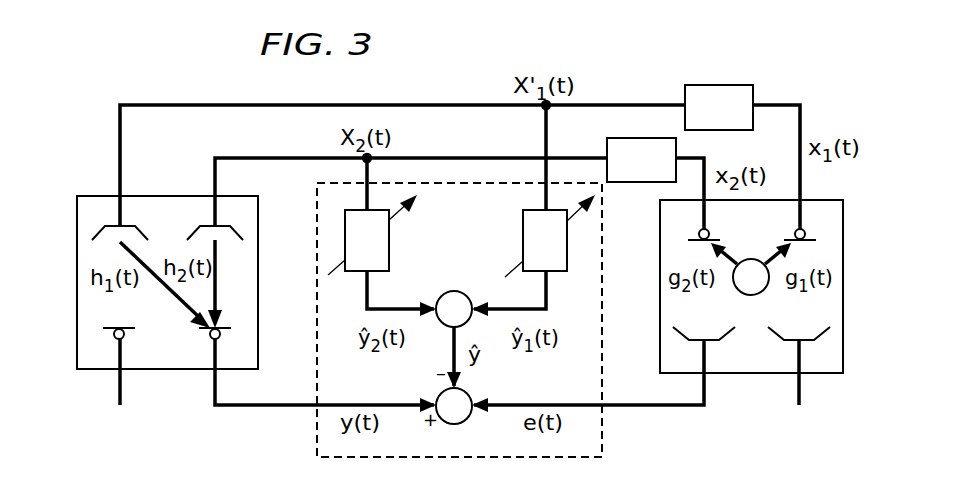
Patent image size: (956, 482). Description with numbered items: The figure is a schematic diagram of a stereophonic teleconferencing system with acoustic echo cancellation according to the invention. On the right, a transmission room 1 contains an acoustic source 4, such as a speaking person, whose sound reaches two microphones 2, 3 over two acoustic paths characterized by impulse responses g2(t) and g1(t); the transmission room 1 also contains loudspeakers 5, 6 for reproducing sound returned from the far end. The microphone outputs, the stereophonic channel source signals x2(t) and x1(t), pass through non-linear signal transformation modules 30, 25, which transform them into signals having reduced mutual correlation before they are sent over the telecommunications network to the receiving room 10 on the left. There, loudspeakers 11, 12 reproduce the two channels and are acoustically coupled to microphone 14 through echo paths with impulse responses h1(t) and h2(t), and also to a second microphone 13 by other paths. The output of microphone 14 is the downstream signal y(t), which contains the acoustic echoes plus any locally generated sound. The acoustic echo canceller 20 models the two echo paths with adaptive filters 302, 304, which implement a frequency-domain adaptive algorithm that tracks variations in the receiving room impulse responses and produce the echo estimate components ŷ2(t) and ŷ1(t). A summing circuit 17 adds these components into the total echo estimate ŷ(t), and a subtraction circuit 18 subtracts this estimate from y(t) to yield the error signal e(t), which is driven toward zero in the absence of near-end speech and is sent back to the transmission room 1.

The transmission room 1 is at (843, 258).
The microphone 2 is at (710, 231).
The microphone 3 is at (806, 232).
The acoustic source 4 is at (751, 259).
The loudspeaker 5 is at (698, 345).
The loudspeaker 6 is at (792, 345).
The receiving room 10 is at (258, 264).
The loudspeaker 11 is at (110, 226).
The loudspeaker 12 is at (211, 228).
The microphone 13 is at (113, 337).
The microphone 14 is at (208, 336).
The summing circuit 17 is at (440, 326).
The subtraction circuit 18 is at (472, 390).
The acoustic echo canceller 20 is at (315, 440).
The non-linear signal transformation module 25 is at (718, 85).
The non-linear signal transformation module 30 is at (633, 138).
The adaptive filter 302 is at (390, 237).
The adaptive filter 304 is at (522, 244).